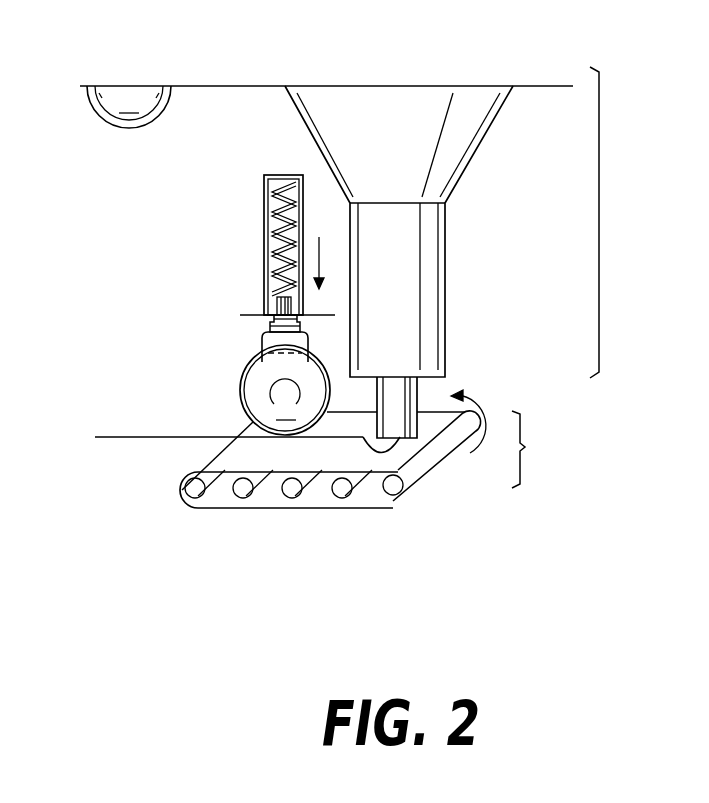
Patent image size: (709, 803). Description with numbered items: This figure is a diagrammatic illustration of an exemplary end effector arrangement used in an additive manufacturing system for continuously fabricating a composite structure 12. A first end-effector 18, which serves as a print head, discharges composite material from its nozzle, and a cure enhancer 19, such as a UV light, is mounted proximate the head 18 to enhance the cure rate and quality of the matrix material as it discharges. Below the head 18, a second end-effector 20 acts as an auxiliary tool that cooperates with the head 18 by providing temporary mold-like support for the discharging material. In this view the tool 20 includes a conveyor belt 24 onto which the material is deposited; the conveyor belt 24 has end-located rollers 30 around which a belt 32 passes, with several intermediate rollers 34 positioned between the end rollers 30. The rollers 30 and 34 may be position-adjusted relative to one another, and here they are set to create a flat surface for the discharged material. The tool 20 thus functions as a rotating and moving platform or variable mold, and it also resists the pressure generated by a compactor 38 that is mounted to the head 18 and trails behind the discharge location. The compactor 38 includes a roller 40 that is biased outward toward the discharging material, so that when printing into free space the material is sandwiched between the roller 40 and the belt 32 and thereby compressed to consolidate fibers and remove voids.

The composite structure 12 is at (123, 437).
The first end-effector 18 is at (600, 268).
The cure enhancer 19 is at (129, 106).
The second end-effector 20 is at (525, 447).
The conveyor belt 24 is at (240, 516).
The end-located rollers 30 is at (187, 493).
The belt 32 is at (422, 467).
The intermediate rollers 34 is at (296, 498).
The compactor 38 is at (131, 312).
The roller 40 is at (285, 390).